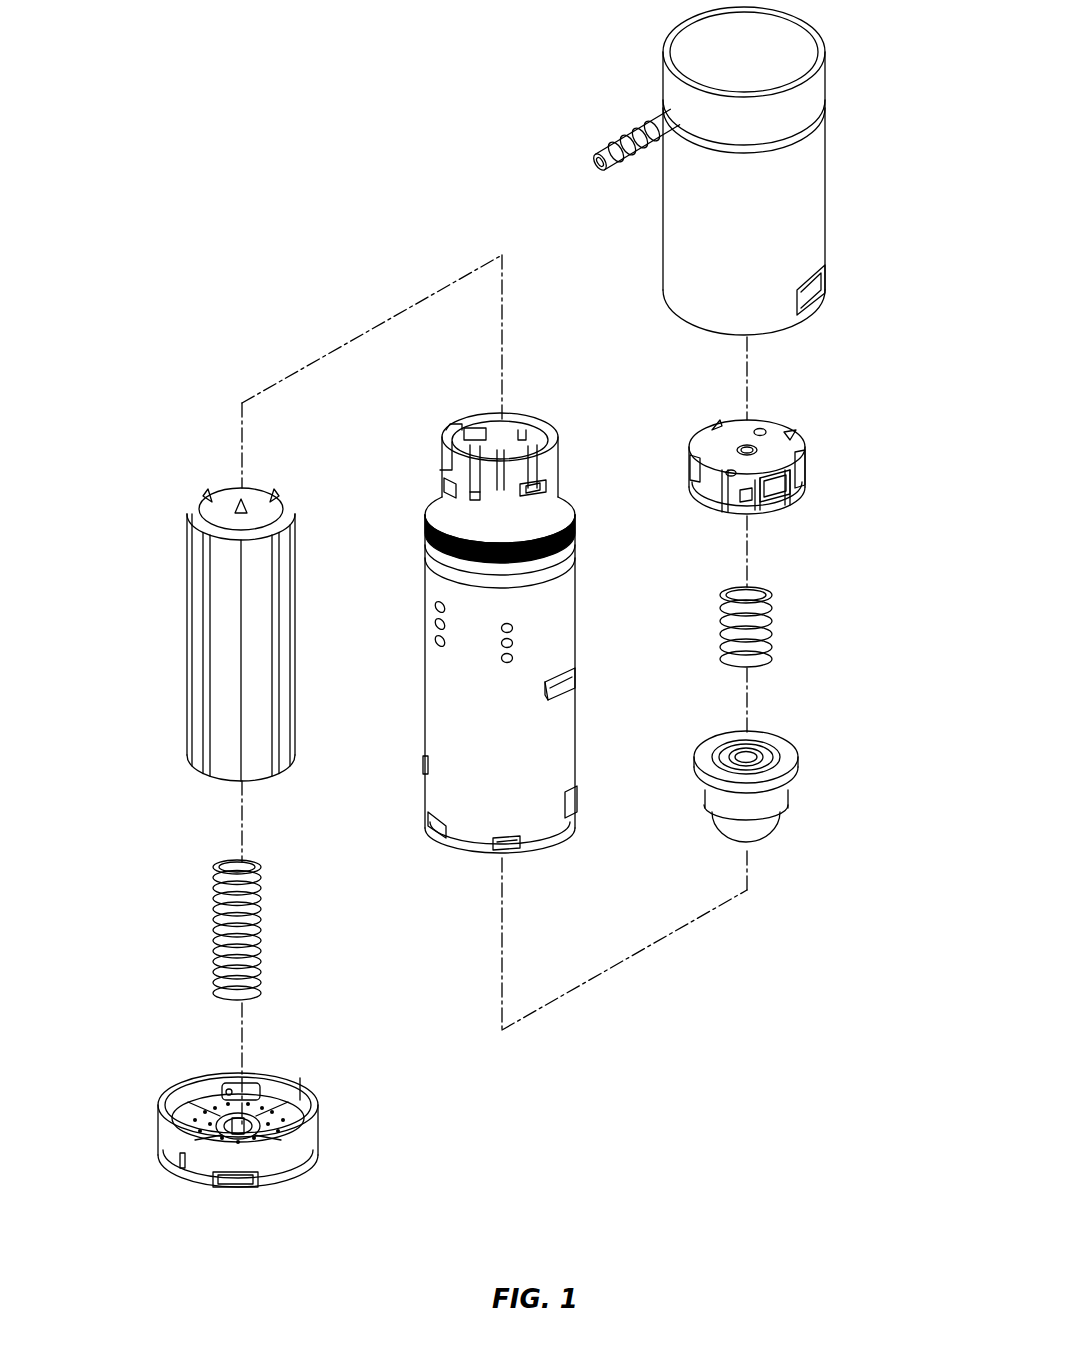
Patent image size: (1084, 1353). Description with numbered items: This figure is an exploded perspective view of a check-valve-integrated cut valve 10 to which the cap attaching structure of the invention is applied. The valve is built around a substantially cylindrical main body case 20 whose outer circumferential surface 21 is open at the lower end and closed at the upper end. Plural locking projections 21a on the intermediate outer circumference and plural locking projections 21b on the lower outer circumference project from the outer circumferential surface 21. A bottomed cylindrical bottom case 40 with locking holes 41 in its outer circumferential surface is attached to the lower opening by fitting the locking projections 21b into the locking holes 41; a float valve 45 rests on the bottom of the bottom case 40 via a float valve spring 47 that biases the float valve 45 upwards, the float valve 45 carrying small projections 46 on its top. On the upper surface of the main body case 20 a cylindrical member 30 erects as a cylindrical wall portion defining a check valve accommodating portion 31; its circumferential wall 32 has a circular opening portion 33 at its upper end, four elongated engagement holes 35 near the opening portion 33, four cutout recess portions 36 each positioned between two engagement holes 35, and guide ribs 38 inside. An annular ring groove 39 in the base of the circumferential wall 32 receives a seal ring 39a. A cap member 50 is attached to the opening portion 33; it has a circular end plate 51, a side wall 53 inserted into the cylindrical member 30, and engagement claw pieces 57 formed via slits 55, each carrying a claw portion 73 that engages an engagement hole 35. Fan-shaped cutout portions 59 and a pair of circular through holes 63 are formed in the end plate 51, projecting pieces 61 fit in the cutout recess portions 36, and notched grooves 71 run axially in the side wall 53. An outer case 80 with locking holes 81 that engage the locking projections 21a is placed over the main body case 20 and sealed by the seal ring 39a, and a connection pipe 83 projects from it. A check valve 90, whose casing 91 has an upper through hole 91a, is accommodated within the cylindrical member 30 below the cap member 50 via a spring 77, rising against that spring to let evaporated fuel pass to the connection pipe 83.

The check-valve-integrated cut valve 10 is at (396, 252).
The main body case 20 is at (548, 701).
The outer circumferential surface 21 is at (557, 736).
The locking projections 21a is at (578, 680).
The locking projections 21b is at (508, 846).
The cylindrical member 30 is at (480, 418).
The check valve accommodating portion 31 is at (512, 458).
The circumferential wall 32 is at (553, 490).
The opening portion 33 is at (466, 430).
The engagement holes 35 is at (478, 428).
The cutout recess portions 36 is at (526, 430).
The guide ribs 38 is at (446, 465).
The annular ring groove 39 is at (560, 562).
The seal ring 39a is at (574, 528).
The bottom case 40 is at (283, 1134).
The locking holes 41 is at (229, 1088).
The float valve 45 is at (191, 612).
The projection 46 is at (235, 505).
The float valve spring 47 is at (213, 908).
The cap member 50 is at (758, 476).
The end plate 51 is at (789, 437).
The side wall 53 is at (794, 485).
The slits 55 is at (790, 503).
The engagement claw pieces 57 is at (700, 468).
The cutout portions 59 is at (742, 447).
The projecting pieces 61 is at (805, 465).
The circular through holes 63 is at (762, 429).
The notched grooves 71 is at (723, 512).
The claw portion 73 is at (770, 500).
The spring 77 is at (773, 628).
The outer case 80 is at (705, 180).
The locking holes 81 is at (814, 298).
The connection pipe 83 is at (648, 126).
The check valve 90 is at (791, 766).
The casing 91 is at (780, 805).
The upper through hole 91a is at (750, 750).